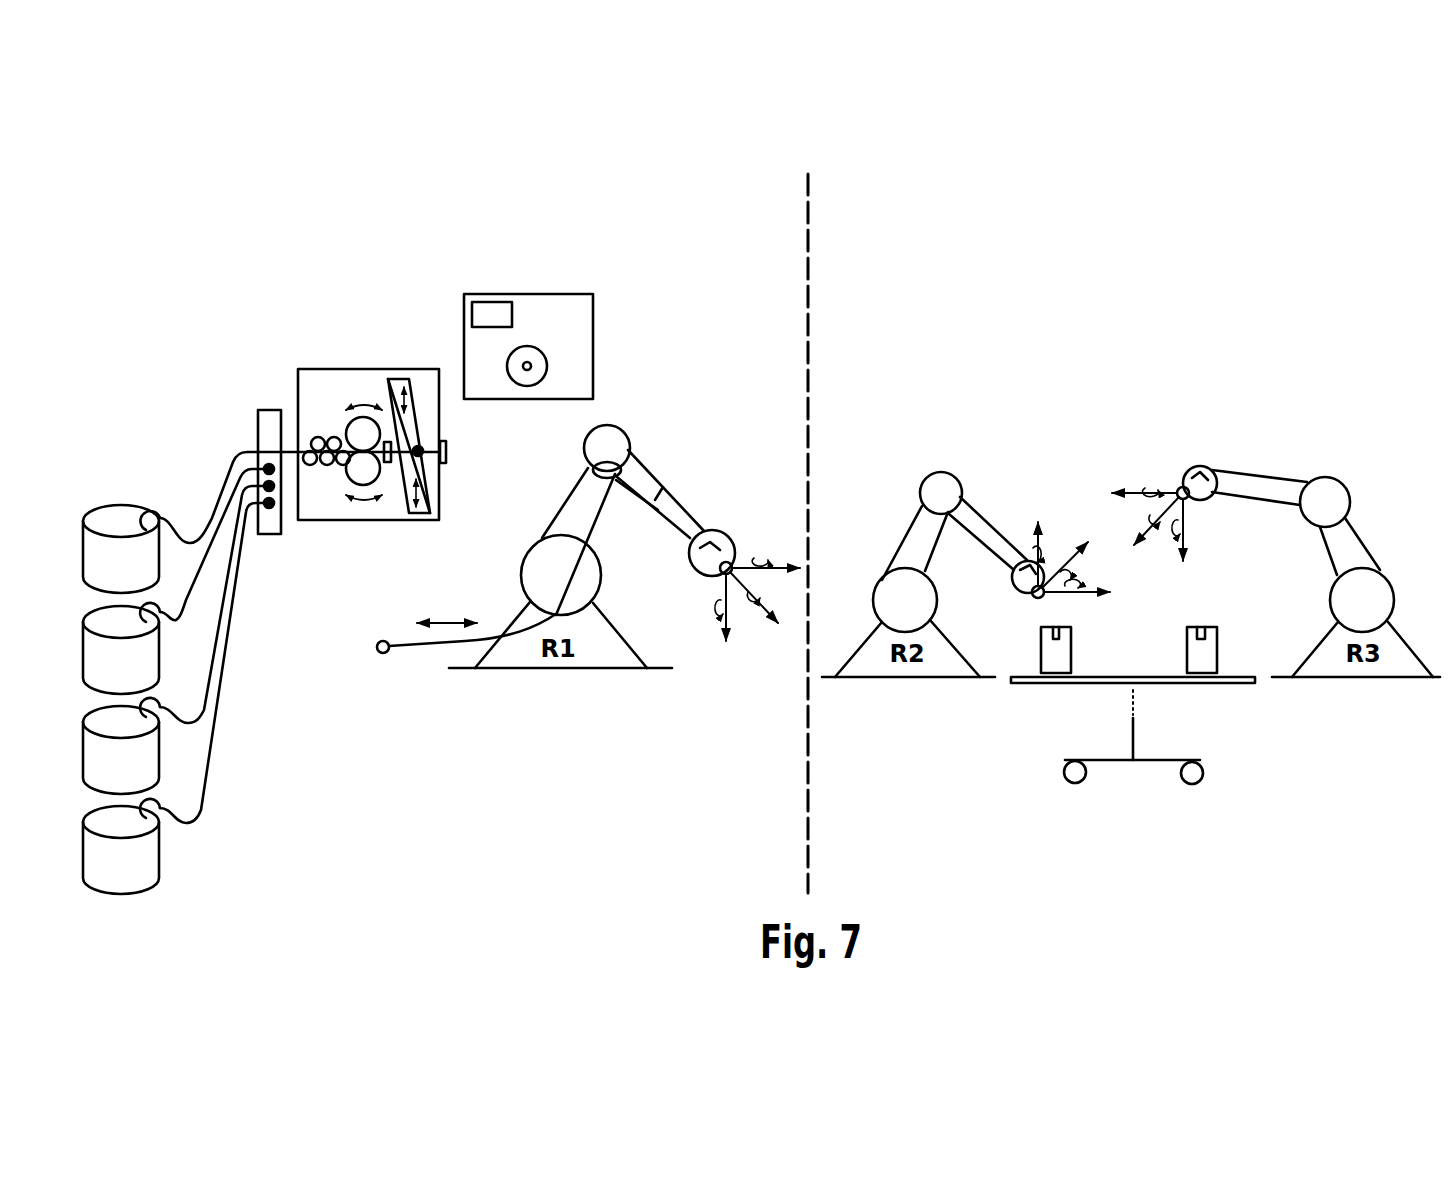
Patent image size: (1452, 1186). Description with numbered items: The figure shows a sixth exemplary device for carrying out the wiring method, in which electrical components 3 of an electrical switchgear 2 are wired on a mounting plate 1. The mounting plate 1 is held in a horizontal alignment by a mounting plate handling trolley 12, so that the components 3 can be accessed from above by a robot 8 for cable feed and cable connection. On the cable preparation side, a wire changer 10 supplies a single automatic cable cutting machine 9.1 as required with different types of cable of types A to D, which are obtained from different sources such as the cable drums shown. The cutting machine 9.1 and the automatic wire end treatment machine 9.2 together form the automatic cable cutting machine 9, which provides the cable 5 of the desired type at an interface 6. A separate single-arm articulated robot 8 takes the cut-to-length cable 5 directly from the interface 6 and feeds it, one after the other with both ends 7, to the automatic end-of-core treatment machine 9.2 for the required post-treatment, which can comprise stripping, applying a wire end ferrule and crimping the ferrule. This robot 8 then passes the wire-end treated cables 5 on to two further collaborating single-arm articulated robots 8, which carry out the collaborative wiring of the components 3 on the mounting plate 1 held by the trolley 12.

The mounting plate 1 is at (1243, 684).
The electrical switchgear 2 is at (1238, 626).
The electrical component 3 is at (1057, 650).
The cable 5 is at (160, 518).
The interface 6 is at (447, 452).
The cable end 7 is at (383, 653).
The single-arm articulated robot 8 is at (605, 445).
The automatic cable cutting machine 9 is at (295, 222).
The automatic cable cutting machine 9.1 is at (362, 385).
The automatic wire end treatment machine 9.2 is at (567, 311).
The wire changer 10 is at (258, 395).
The mounting plate handling trolley 12 is at (1133, 740).